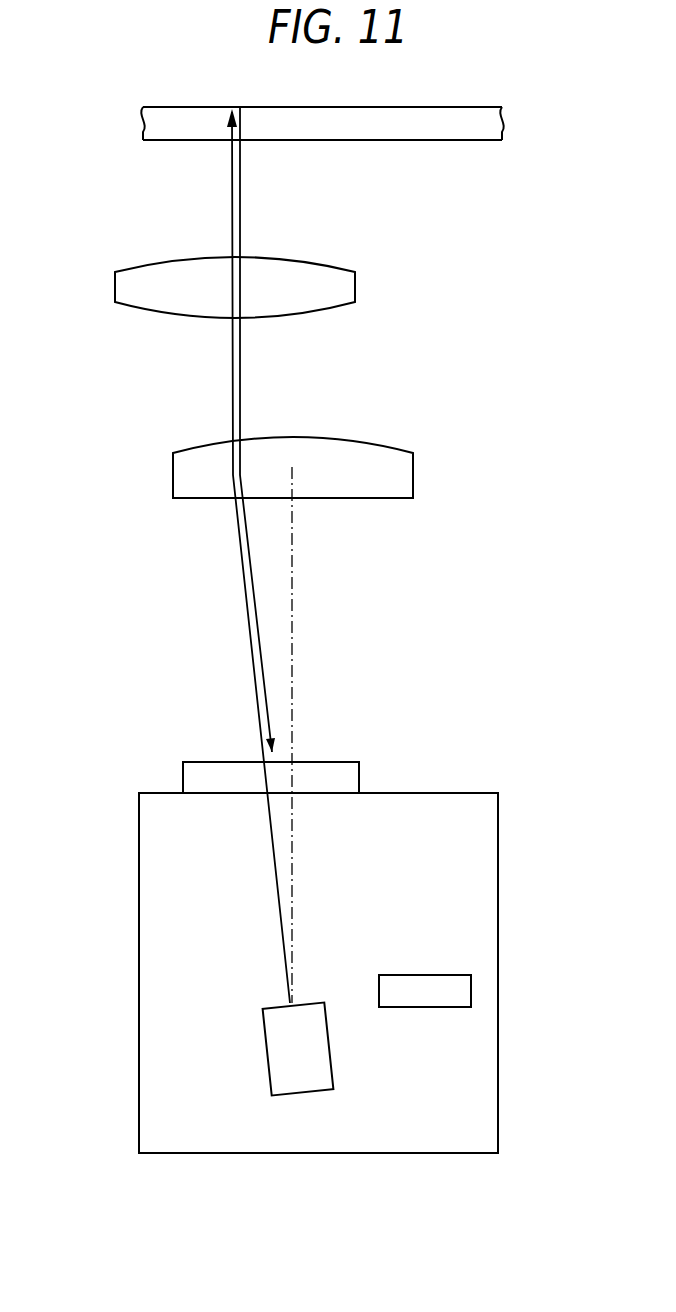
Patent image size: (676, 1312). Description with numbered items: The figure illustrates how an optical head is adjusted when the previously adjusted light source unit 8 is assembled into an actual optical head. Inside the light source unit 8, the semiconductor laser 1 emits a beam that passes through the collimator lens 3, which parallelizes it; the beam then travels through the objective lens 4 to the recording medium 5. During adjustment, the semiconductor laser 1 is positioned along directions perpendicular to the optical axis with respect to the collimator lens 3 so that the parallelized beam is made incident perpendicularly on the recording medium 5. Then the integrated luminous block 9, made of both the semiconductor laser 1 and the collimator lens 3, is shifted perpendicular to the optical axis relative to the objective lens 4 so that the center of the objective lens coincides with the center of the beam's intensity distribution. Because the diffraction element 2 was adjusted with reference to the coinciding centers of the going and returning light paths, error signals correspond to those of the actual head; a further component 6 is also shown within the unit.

The semiconductor laser 1 is at (265, 1053).
The diffraction element 2 is at (182, 773).
The collimator lens 3 is at (173, 485).
The objective lens 4 is at (113, 290).
The recording medium 5 is at (477, 141).
The photodetector 6 is at (458, 990).
The light source unit 8 is at (513, 853).
The integrated luminous block 9 is at (415, 484).